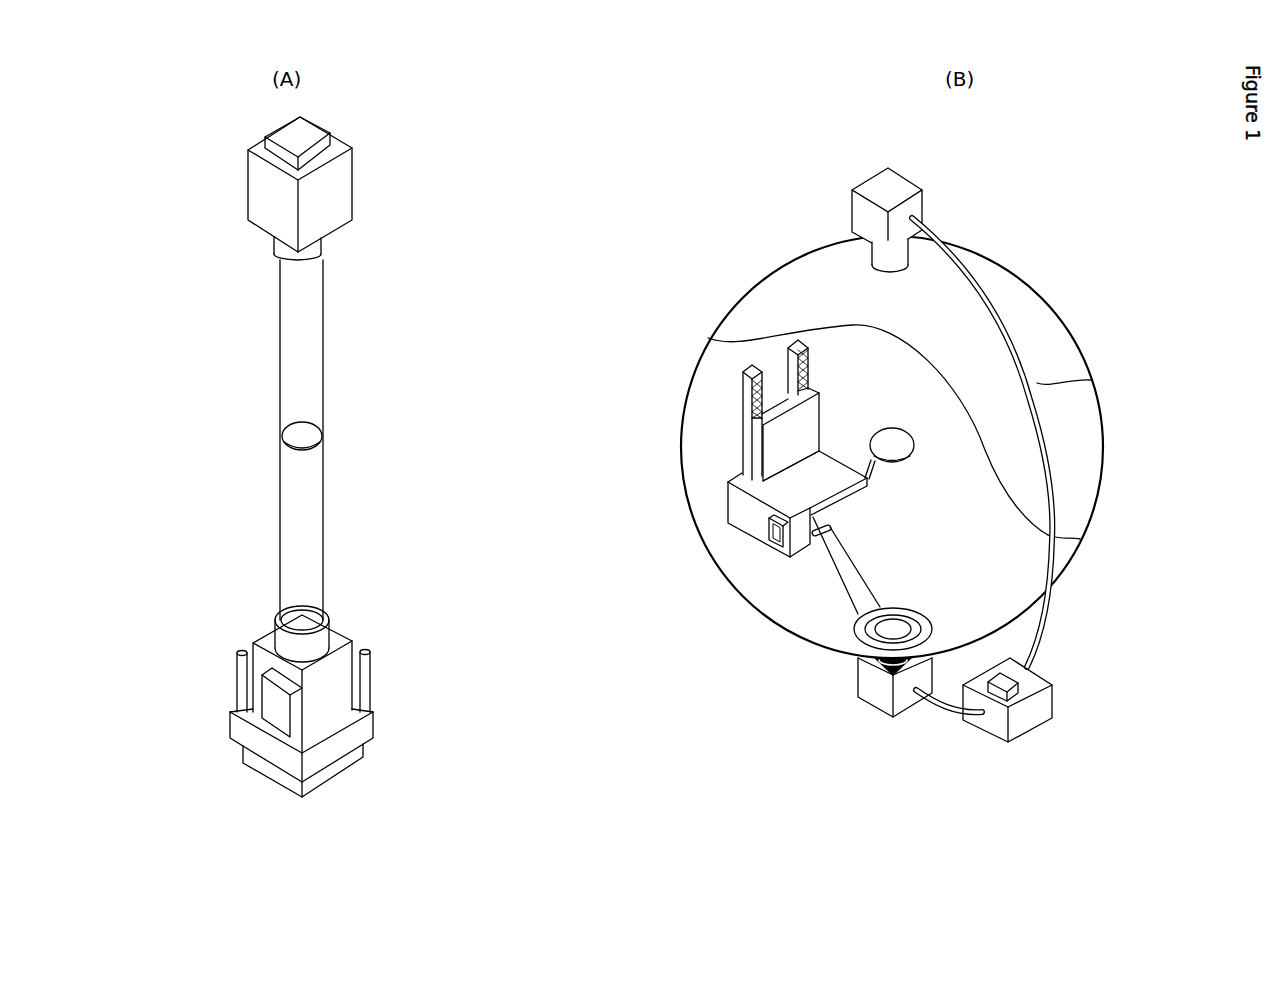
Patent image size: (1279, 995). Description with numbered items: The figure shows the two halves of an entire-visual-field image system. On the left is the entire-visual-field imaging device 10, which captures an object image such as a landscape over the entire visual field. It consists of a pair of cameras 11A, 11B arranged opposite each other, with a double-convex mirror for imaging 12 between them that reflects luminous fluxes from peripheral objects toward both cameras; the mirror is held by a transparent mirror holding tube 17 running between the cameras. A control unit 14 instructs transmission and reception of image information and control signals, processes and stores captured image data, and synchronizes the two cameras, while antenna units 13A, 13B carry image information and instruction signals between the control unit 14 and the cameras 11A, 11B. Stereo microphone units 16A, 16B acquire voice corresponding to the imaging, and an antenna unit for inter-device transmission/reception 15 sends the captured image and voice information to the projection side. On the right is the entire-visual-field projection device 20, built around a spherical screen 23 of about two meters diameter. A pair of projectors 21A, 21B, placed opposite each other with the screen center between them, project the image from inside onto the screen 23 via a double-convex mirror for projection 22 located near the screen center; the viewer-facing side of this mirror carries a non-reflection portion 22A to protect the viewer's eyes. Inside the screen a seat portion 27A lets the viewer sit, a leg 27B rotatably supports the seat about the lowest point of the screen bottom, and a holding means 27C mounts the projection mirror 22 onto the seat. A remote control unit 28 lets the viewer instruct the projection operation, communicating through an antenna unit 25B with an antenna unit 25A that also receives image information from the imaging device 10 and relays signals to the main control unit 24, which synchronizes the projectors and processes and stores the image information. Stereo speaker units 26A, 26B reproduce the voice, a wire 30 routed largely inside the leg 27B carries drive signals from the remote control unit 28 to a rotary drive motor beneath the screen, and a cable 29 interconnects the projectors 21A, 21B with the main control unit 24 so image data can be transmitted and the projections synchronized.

The entire-visual-field imaging device 10 is at (470, 158).
The camera 11A is at (364, 184).
The camera 11B is at (366, 624).
The double-convex mirror for imaging 12 is at (310, 431).
The antenna unit 13A is at (308, 132).
The antenna unit 13B is at (272, 718).
The control unit 14 is at (372, 733).
The antenna unit for inter-device transmission/reception 15 is at (357, 762).
The microphone unit 16A is at (372, 659).
The microphone unit 16B is at (236, 665).
The mirror holding tube 17 is at (314, 309).
The entire-visual-field projection device 20 is at (1075, 212).
The projector 21A is at (941, 185).
The projector 21B is at (847, 712).
The double-convex mirror for projection 22 is at (909, 430).
The non-reflection portion 22A is at (863, 444).
The spherical screen 23 is at (1046, 305).
The main control unit 24 is at (1053, 700).
The antenna unit 25A is at (1016, 679).
The antenna unit 25B is at (777, 547).
The speaker unit 26A is at (809, 360).
The speaker unit 26B is at (747, 405).
The seat portion 27A is at (814, 413).
The leg 27B is at (871, 583).
The holding means 27C is at (876, 465).
The remote control unit 28 is at (765, 530).
The cable 29 is at (1034, 393).
The wire 30 is at (821, 541).